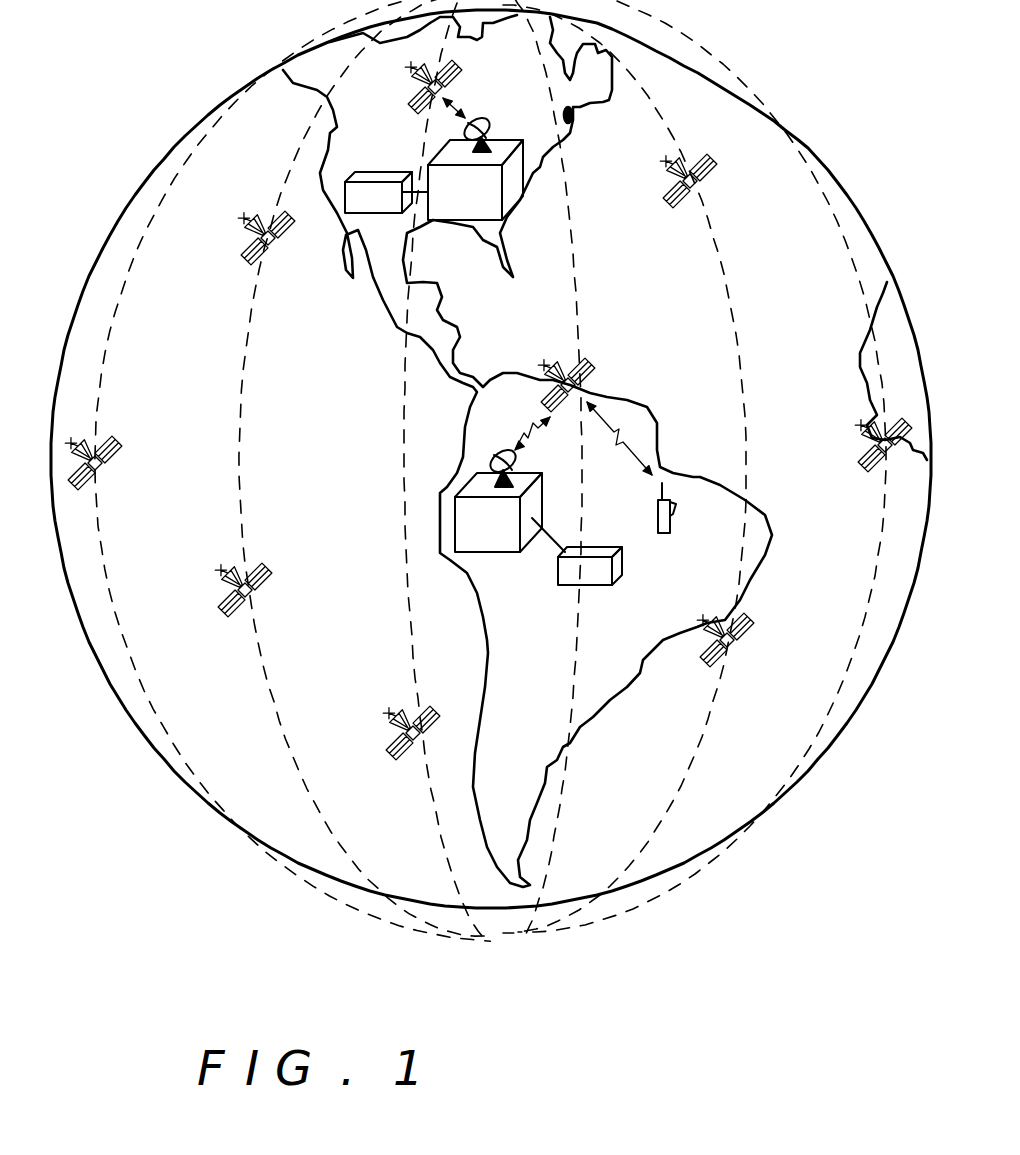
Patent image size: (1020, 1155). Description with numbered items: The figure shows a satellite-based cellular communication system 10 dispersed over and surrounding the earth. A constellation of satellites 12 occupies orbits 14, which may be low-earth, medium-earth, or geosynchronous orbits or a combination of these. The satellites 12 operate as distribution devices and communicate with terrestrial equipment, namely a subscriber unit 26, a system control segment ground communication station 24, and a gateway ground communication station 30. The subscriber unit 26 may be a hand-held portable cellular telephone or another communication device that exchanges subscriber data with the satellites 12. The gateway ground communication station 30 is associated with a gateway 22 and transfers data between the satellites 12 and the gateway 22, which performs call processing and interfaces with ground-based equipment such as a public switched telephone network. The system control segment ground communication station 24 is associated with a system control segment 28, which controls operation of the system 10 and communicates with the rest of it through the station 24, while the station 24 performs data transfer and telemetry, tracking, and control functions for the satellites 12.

The satellite-based cellular communication system 10 is at (583, 1030).
The satellite 12 is at (410, 104).
The orbit 14 is at (289, 185).
The gateway 22 is at (602, 586).
The system control segment ground communication station 24 is at (512, 139).
The subscriber unit 26 is at (673, 518).
The system control segment 28 is at (380, 171).
The gateway ground communication station 30 is at (495, 553).